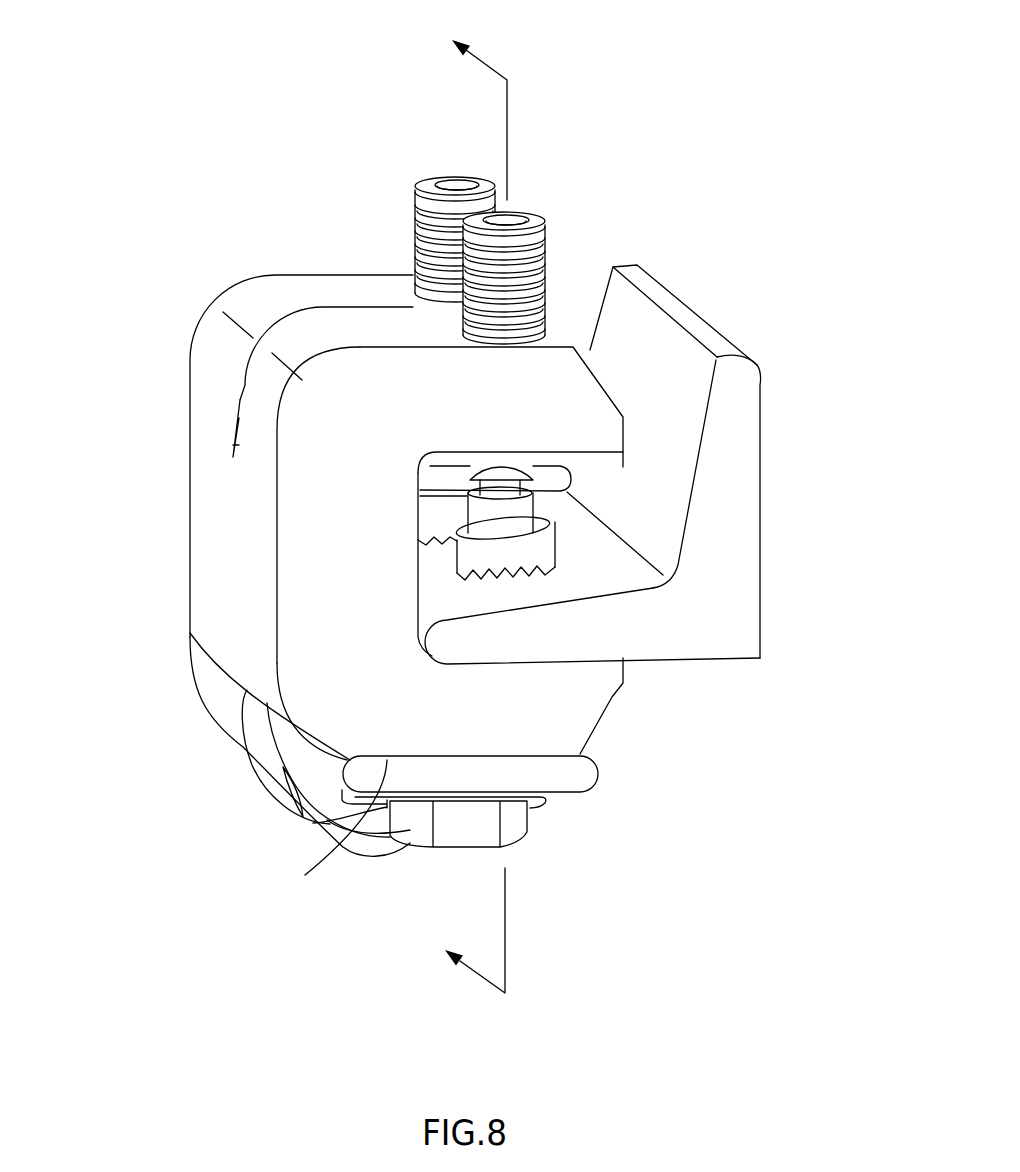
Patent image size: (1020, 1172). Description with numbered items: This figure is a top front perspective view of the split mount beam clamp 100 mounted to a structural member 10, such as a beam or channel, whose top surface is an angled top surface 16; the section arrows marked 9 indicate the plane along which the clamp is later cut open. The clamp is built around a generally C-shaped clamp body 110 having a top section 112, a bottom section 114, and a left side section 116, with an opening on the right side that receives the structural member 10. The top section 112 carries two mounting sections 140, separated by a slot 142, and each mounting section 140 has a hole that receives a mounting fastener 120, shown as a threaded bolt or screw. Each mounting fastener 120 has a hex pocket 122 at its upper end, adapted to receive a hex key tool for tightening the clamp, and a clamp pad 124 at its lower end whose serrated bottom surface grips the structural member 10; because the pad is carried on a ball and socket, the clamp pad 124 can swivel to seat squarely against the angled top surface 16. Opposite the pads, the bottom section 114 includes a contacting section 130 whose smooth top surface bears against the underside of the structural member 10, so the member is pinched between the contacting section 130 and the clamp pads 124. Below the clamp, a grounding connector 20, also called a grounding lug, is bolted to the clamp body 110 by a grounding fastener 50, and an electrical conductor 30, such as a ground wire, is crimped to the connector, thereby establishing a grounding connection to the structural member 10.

The split mount beam clamp 100 is at (181, 222).
The clamp body 110 is at (203, 327).
The top section 112 is at (555, 337).
The bottom section 114 is at (327, 860).
The left side section 116 is at (230, 557).
The mounting fastener 120 is at (414, 200).
The hex pocket 122 is at (453, 178).
The clamp pad 124 is at (560, 540).
The contacting section 130 is at (587, 705).
The mounting section 140 is at (330, 290).
The slot 142 is at (230, 440).
The structural member 10 is at (760, 397).
The angled top surface 16 is at (613, 567).
The grounding connector 20 is at (600, 775).
The electrical conductor 30 is at (223, 715).
The grounding fastener 50 is at (513, 830).
The section line 9- 9 is at (467, 506).